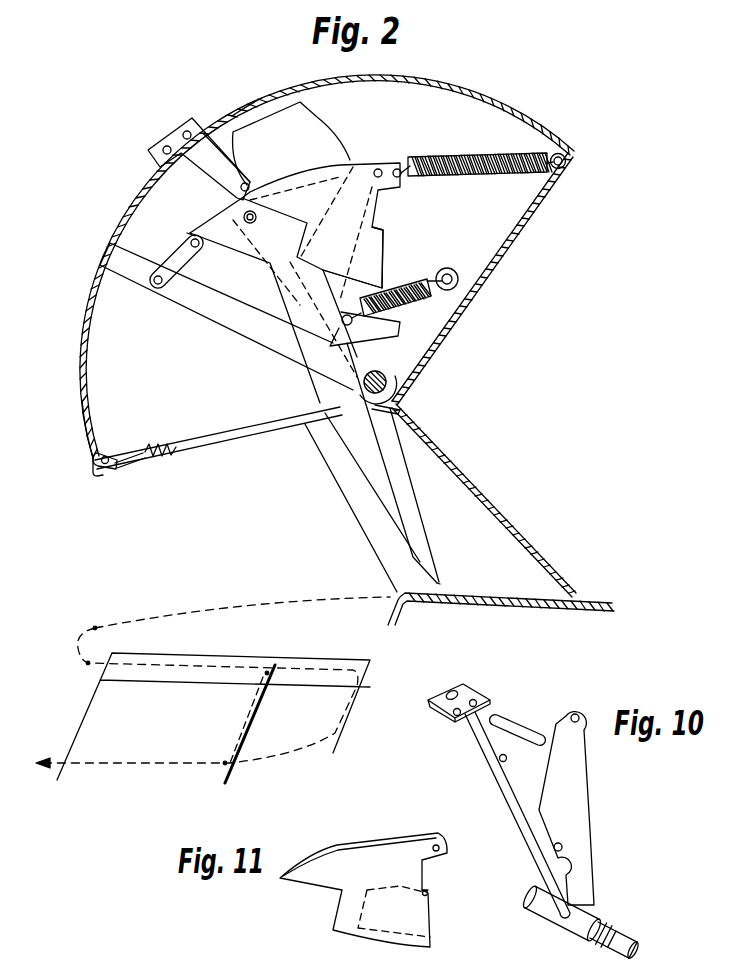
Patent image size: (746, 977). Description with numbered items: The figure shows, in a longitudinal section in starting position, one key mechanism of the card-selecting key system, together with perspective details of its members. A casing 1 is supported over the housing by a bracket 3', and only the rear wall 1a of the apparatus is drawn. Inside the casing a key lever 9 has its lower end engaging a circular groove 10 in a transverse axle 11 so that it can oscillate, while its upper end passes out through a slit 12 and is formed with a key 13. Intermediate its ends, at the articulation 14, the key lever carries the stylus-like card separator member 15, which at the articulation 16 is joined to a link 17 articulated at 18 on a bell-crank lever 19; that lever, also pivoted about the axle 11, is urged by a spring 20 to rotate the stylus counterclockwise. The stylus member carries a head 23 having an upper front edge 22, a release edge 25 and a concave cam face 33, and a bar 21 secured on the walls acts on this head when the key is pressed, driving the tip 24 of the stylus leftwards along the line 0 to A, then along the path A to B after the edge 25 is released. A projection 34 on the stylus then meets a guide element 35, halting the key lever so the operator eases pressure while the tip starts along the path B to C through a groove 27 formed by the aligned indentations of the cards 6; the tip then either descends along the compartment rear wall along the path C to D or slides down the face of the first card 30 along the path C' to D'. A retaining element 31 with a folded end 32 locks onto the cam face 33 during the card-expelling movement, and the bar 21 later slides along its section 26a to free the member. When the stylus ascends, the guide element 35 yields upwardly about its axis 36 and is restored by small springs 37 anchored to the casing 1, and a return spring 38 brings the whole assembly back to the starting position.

In FIG. 2, the casing 1 is at (436, 80).
In FIG. 2, the rear wall 1a is at (437, 134).
In FIG. 2, the bracket 3' is at (484, 500).
In FIG. 2, the key lever 9 is at (396, 374).
In FIG. 10, the key lever 9 is at (566, 872).
In FIG. 10, the circular groove 10 is at (614, 928).
In FIG. 2, the transverse axle 11 is at (402, 412).
In FIG. 10, the transverse axle 11 is at (645, 948).
In FIG. 2, the slit 12 is at (88, 430).
In FIG. 2, the key 13 is at (170, 132).
In FIG. 10, the key 13 is at (470, 690).
In FIG. 2, the articulation 14 is at (257, 221).
In FIG. 10, the articulation 14 is at (502, 770).
In FIG. 2, the stylus-like card separator member 15 is at (300, 346).
In FIG. 2, the articulation 16 is at (187, 233).
In FIG. 2, the link 17 is at (182, 262).
In FIG. 2, the articulation 18 is at (161, 290).
In FIG. 2, the bell-crank lever 19 is at (108, 272).
In FIG. 2, the spring 20 is at (447, 292).
In FIG. 2, the bar 21 is at (250, 182).
In FIG. 10, the bar 21 is at (514, 722).
In FIG. 2, the upper front edge 22 is at (228, 178).
In FIG. 2, the head 23 is at (325, 118).
In FIG. 2, the tip 24 is at (434, 576).
In FIG. 2, the edge 25 is at (234, 116).
In FIG. 2, the section of retaining element 26a is at (305, 172).
In FIG. 11, the section of retaining element 26a is at (367, 842).
In FIG. 2, the groove 27 is at (207, 660).
In FIG. 2, the first card 30 is at (260, 722).
In FIG. 2, the retaining element 31 is at (373, 263).
In FIG. 11, the retaining element 31 is at (426, 928).
In FIG. 11, the folded end 32 is at (427, 890).
In FIG. 2, the cam face 33 is at (302, 92).
In FIG. 2, the projection 34 is at (312, 412).
In FIG. 2, the guide element 35 is at (130, 452).
In FIG. 2, the axis 36 is at (100, 478).
In FIG. 2, the small springs 37 is at (172, 446).
In FIG. 2, the spring 38 is at (513, 152).
In FIG. 2, the starting point of tip path 0 is at (440, 584).
In FIG. 2, the cards 6 is at (76, 730).
In FIG. 2, the path point A is at (100, 613).
In FIG. 2, the path point B is at (83, 681).
In FIG. 2, the path point C is at (375, 678).
In FIG. 2, the path point C' is at (277, 647).
In FIG. 2, the path point D is at (348, 739).
In FIG. 2, the path point D' is at (218, 755).